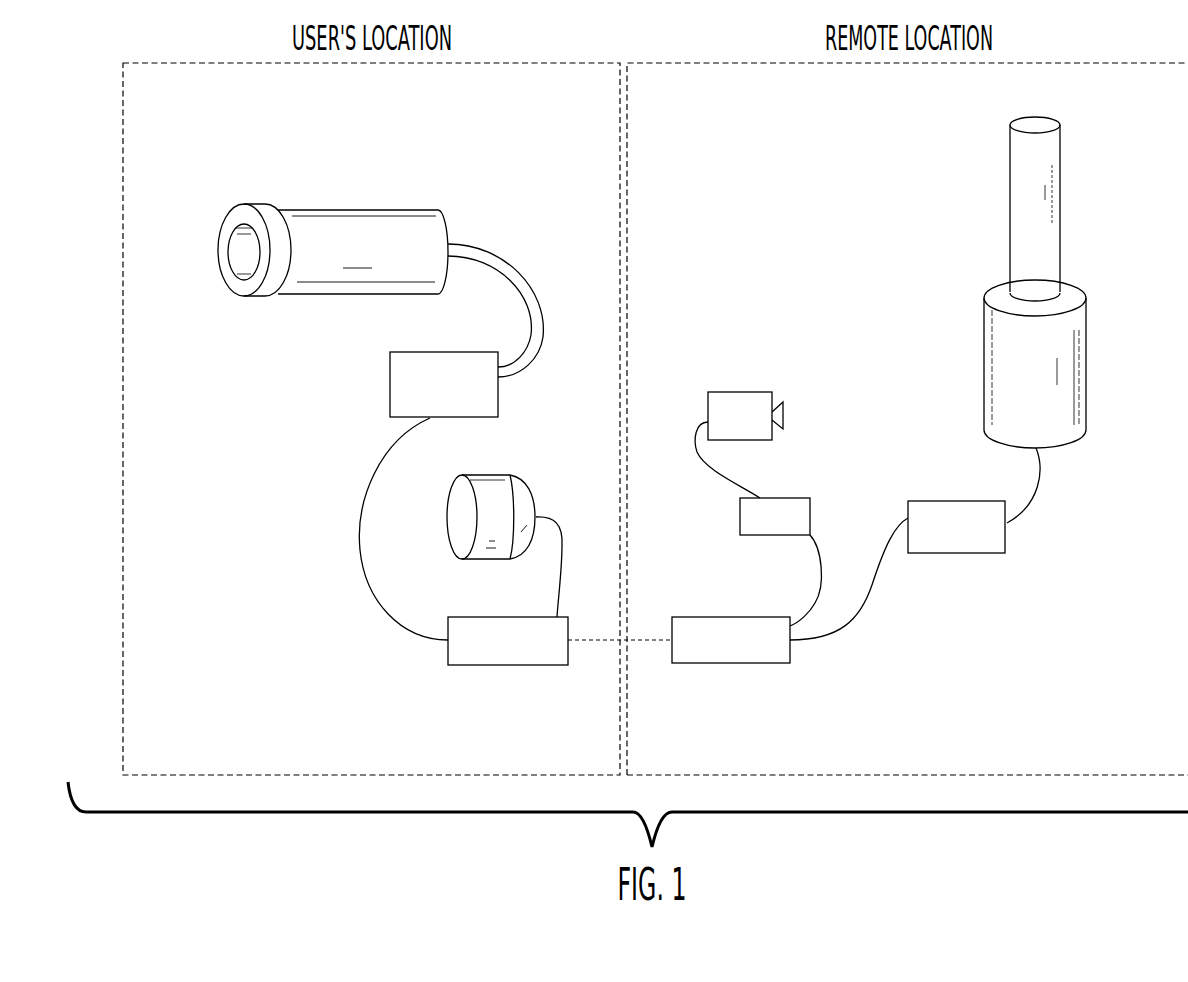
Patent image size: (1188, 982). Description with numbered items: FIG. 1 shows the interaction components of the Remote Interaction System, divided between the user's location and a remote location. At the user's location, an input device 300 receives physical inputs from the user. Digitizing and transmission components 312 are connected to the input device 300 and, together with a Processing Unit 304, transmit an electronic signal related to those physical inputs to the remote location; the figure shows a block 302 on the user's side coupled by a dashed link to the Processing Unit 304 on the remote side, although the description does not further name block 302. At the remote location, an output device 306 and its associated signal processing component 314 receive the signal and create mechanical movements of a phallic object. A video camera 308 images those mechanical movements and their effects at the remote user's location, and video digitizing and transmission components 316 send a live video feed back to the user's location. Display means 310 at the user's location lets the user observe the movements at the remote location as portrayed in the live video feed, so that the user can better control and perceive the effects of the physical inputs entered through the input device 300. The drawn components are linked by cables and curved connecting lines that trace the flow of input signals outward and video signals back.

The input device 300 is at (388, 222).
The user-side computing device 302 is at (477, 665).
The Processing Unit 304 is at (727, 663).
The output device 306 is at (1086, 367).
The video camera 308 is at (753, 392).
The display means 310 is at (520, 485).
The digitizing and transmission components 312 is at (390, 390).
The signal processing component 314 is at (957, 553).
The video digitizing and transmission components 316 is at (810, 514).